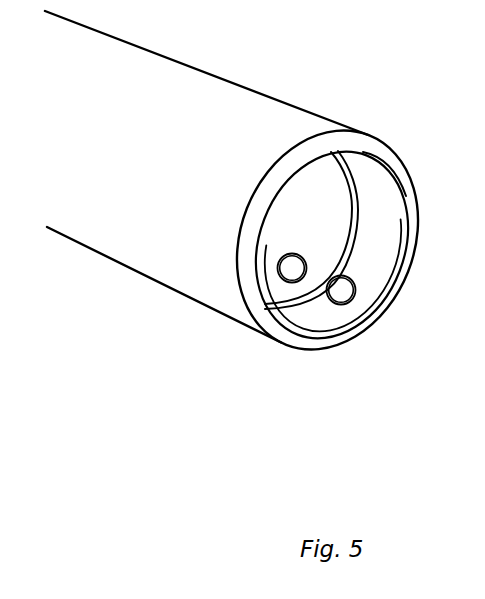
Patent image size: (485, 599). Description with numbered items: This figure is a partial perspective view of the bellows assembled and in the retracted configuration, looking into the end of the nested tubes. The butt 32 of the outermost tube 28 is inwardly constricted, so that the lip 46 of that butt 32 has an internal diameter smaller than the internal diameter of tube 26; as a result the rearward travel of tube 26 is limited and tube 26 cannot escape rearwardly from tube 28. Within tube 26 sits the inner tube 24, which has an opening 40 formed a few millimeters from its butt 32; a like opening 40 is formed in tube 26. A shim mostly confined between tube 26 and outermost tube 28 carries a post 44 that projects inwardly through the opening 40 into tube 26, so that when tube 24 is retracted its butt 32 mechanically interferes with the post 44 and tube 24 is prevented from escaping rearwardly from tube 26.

The outermost tube 28 is at (247, 194).
The lip 46 is at (332, 237).
The inner tube 24 is at (311, 230).
The butt 32 is at (294, 257).
The tube 26 is at (384, 195).
The post 44 is at (310, 300).
The opening 40 is at (349, 340).